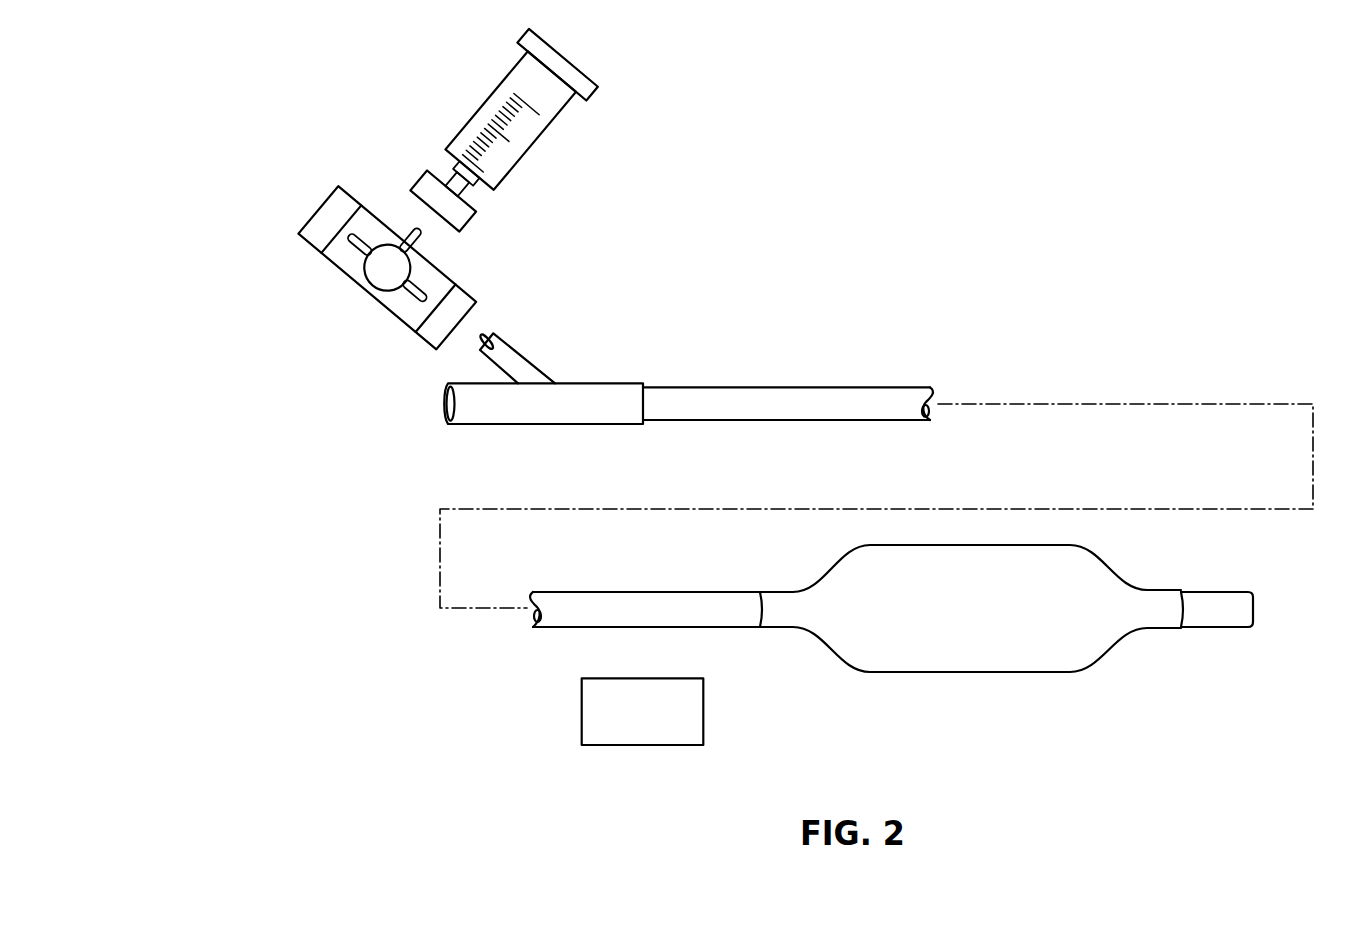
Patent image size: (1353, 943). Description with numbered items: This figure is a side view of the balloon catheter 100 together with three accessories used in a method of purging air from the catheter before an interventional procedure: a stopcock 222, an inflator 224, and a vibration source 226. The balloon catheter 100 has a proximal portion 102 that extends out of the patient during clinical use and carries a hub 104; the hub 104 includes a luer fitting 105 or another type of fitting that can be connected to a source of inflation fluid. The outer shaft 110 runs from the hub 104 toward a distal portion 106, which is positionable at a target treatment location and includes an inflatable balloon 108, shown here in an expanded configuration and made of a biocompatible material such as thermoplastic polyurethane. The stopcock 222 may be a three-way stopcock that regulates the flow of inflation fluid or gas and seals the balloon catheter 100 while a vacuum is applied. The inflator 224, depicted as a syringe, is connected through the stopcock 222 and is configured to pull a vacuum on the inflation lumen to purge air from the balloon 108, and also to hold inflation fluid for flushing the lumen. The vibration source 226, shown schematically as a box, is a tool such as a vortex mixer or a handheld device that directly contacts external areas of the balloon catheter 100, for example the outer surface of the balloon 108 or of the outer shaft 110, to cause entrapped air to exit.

The balloon catheter 100 is at (870, 450).
The proximal portion 102 is at (680, 428).
The hub 104 is at (510, 410).
The luer fitting 105 is at (518, 363).
The distal portion 106 is at (1013, 649).
The inflatable balloon 108 is at (982, 645).
The outer shaft 110 is at (833, 398).
The stopcock 222 is at (466, 204).
The inflator 224 is at (555, 151).
The vibration source 226 is at (643, 711).